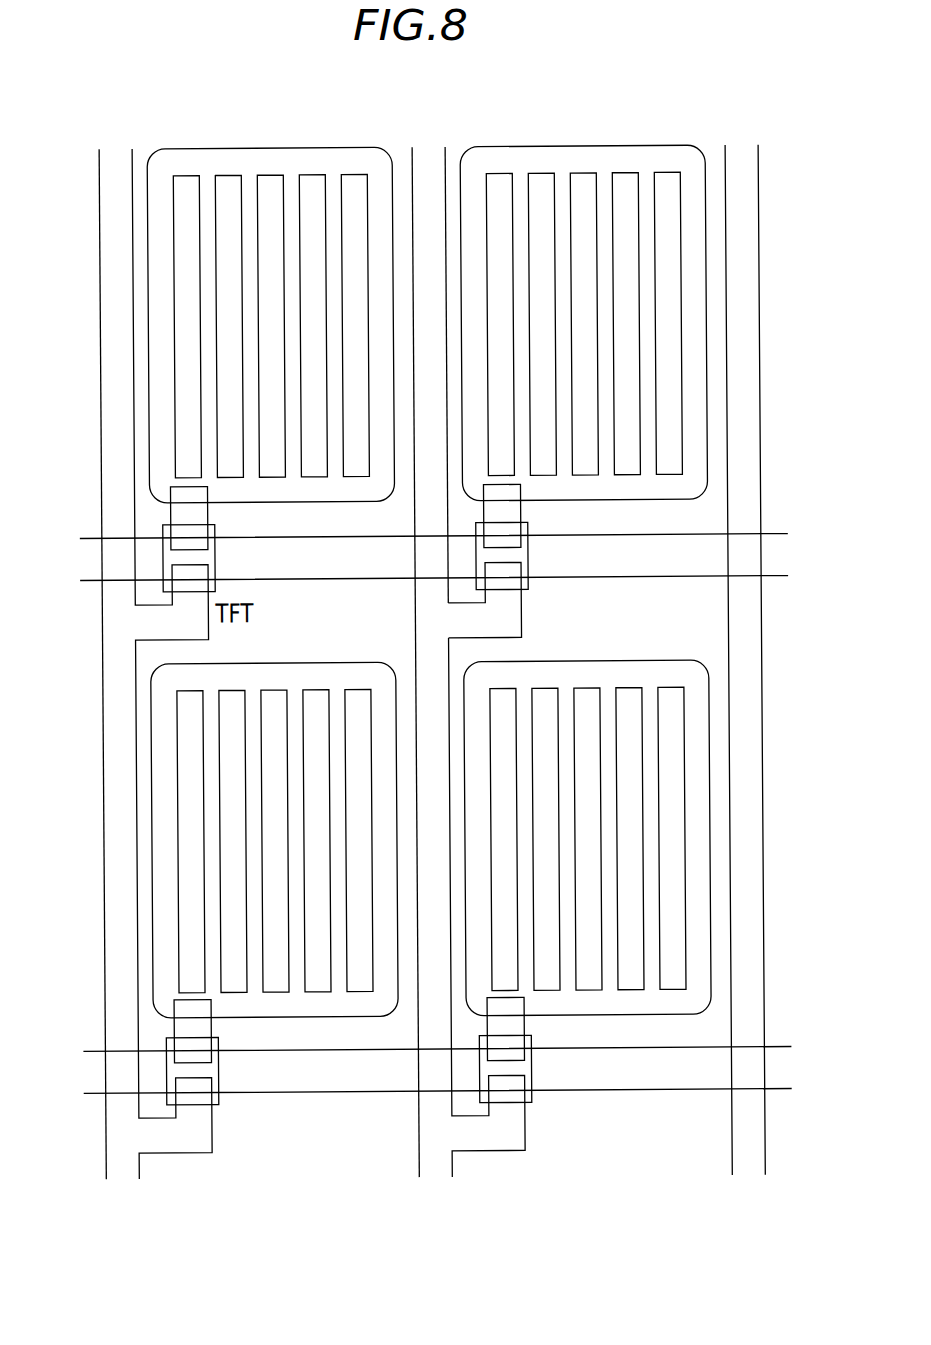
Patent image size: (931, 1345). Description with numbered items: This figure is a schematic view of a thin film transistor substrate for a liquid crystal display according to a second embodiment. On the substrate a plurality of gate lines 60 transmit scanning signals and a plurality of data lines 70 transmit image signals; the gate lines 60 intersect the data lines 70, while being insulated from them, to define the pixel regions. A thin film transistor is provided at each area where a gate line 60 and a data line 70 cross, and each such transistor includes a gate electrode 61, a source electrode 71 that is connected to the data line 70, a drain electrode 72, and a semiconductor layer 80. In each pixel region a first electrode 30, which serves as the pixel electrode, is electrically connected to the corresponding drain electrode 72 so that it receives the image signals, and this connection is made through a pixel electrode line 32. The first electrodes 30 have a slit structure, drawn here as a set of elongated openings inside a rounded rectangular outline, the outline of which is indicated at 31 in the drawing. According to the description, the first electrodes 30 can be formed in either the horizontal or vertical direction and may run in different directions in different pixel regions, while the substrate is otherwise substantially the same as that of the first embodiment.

The first electrode 30 is at (601, 313).
The pixel electrode body 31 is at (626, 147).
The pixel electrode line 32 is at (675, 493).
The gate line 60 is at (777, 534).
The gate electrode 61 is at (529, 556).
The data line 70 is at (758, 432).
The source electrode 71 is at (522, 628).
The drain electrode 72 is at (523, 509).
The semiconductor layer 80 is at (478, 570).